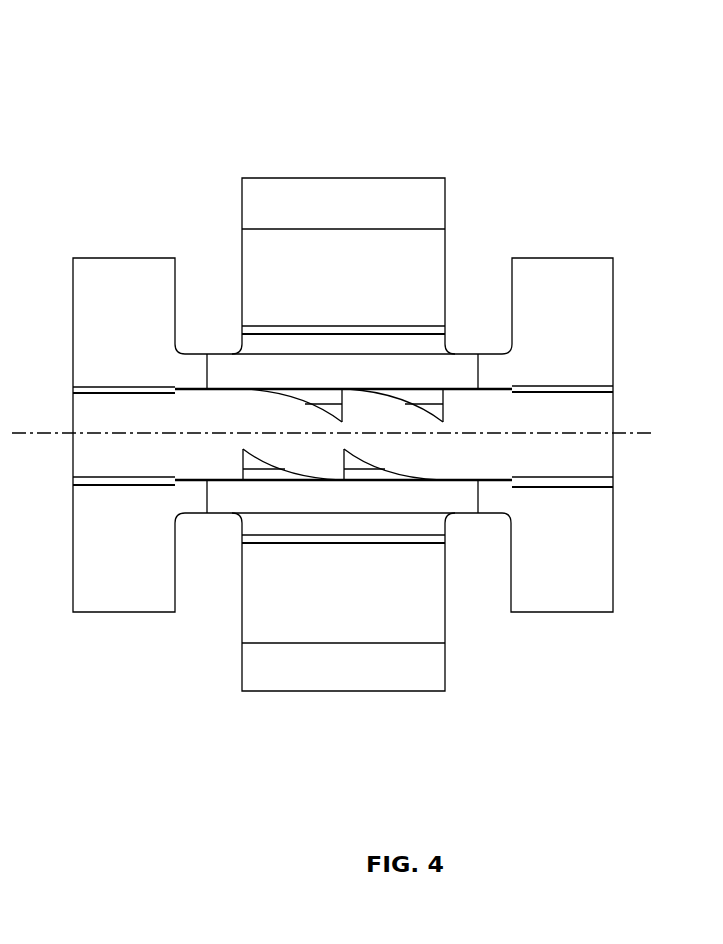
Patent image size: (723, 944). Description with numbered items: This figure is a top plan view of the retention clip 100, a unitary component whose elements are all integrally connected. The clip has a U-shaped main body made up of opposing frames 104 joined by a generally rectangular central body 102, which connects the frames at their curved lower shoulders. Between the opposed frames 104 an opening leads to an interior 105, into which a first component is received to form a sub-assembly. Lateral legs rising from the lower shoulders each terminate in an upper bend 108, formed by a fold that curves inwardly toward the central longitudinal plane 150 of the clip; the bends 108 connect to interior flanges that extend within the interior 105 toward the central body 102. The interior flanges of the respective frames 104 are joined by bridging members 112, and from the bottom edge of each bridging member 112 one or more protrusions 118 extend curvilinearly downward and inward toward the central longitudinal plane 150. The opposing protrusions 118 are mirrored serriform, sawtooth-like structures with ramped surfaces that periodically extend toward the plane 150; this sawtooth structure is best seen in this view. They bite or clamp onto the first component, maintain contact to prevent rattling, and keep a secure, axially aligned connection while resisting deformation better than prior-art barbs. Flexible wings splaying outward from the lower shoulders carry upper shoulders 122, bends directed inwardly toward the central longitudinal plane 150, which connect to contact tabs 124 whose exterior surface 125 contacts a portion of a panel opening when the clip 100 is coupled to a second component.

The retention clip 100 is at (172, 84).
The central body 102 is at (80, 440).
The opposing frames 104 is at (602, 302).
The interior 105 is at (600, 410).
The upper bend 108 is at (122, 272).
The bridging member 112 is at (266, 372).
The protrusions 118 is at (390, 397).
The upper shoulders 122 is at (306, 190).
The contact tabs 124 is at (380, 250).
The exterior surface 125 is at (313, 275).
The central longitudinal plane 150 is at (353, 434).